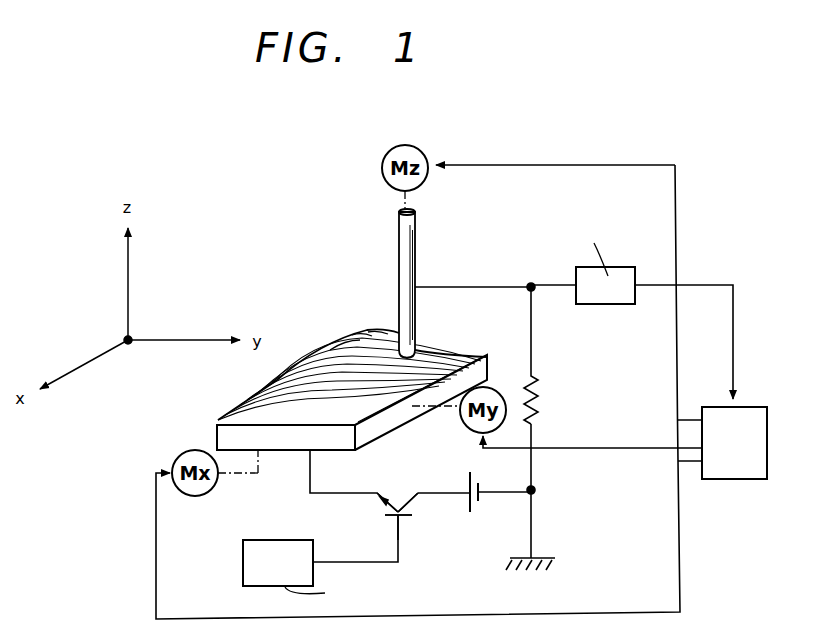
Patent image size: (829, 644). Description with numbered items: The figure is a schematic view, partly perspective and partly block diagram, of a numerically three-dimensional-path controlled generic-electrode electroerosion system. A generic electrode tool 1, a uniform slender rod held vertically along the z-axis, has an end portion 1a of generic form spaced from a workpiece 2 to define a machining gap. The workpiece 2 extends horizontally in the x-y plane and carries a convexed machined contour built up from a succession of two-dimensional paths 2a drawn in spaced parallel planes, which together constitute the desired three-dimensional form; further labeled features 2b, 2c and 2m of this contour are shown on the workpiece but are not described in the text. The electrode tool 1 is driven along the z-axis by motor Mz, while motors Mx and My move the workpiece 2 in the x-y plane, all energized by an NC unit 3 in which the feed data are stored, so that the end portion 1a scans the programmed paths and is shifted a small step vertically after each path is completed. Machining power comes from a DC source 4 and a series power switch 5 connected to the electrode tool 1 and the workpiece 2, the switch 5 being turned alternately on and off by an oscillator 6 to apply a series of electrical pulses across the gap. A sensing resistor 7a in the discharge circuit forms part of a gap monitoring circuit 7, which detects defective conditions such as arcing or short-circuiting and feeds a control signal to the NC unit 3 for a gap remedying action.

The generic electrode tool 1 is at (417, 227).
The electrode end portion 1a is at (412, 348).
The workpiece 2 is at (337, 366).
The two-dimensional paths 2a is at (366, 336).
The bead point 2b is at (380, 337).
The bead ripple 2c is at (350, 336).
The bead ripple line 2m is at (290, 382).
The NC unit 3 is at (712, 480).
The DC source 4 is at (470, 513).
The power switch 5 is at (396, 506).
The oscillator 6 is at (243, 568).
The gap monitoring circuit 7 is at (612, 305).
The sensing resistor 7a is at (540, 398).